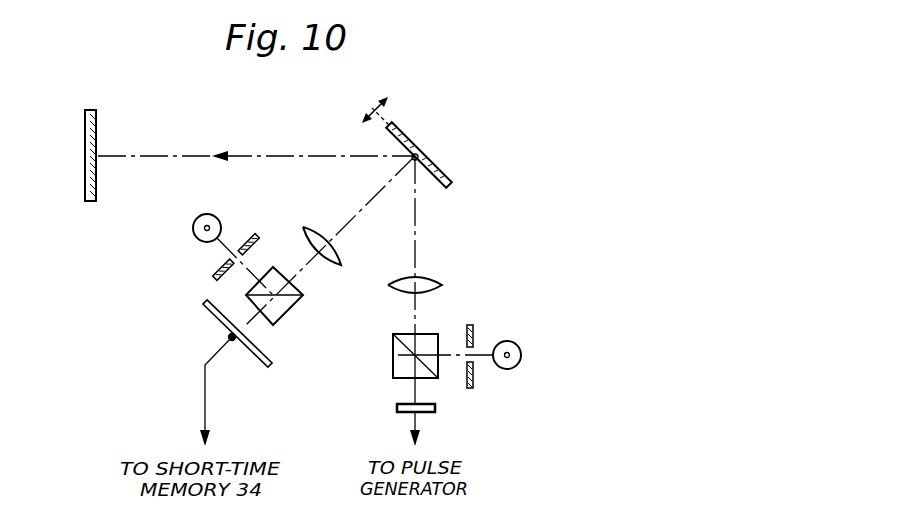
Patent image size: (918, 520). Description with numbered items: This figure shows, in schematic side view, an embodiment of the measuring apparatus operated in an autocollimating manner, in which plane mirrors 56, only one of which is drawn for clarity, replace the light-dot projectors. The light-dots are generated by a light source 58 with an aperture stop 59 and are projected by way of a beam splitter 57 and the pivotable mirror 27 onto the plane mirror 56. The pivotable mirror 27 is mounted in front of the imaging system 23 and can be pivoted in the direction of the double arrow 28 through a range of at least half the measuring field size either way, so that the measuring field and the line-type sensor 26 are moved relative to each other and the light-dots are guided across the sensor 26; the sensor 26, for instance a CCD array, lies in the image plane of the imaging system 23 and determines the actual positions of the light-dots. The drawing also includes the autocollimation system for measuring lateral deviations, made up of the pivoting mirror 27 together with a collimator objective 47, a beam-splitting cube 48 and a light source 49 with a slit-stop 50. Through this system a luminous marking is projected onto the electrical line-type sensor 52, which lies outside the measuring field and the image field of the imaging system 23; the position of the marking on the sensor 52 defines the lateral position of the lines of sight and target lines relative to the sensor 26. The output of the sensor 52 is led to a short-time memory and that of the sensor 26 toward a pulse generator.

The imaging system 23 is at (432, 280).
The line-type sensor 26 is at (398, 407).
The pivotable mirror 27 is at (428, 157).
The double arrow 28 is at (368, 109).
The collimator objective 47 is at (318, 237).
The beam-splitting cube 48 is at (285, 308).
The light source 49 is at (197, 217).
The slit-stop 50 is at (244, 237).
The electrical line-type sensor 52 is at (222, 318).
The plane mirror 56 is at (85, 134).
The beam splitter 57 is at (398, 357).
The light source 58 is at (521, 355).
The aperture stop 59 is at (474, 373).